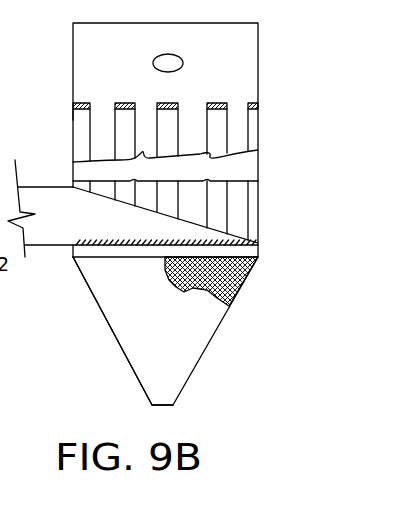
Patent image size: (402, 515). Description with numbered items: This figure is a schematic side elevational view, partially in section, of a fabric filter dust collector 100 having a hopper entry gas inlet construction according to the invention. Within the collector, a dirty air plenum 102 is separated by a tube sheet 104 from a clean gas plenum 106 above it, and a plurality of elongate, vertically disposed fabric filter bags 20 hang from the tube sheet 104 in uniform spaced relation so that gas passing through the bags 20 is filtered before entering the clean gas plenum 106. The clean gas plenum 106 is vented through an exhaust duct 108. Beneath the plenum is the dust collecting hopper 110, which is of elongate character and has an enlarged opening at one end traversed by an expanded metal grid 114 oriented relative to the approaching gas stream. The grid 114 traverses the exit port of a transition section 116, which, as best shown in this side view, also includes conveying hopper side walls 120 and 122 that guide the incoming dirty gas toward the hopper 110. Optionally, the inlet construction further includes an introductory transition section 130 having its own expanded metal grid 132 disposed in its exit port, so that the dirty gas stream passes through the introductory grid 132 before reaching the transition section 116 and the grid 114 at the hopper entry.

The fabric filter dust collector 100 is at (64, 108).
The fabric filter bags 20 is at (88, 122).
The dirty air plenum 102 is at (80, 160).
The tube sheet 104 is at (82, 104).
The clean gas plenum 106 is at (88, 48).
The exhaust duct 108 is at (177, 71).
The dust collecting hopper 110 is at (92, 296).
The expanded metal grid 114 is at (250, 282).
The transition section 116 is at (211, 383).
The conveying hopper side wall 120 is at (127, 363).
The conveying hopper side wall 122 is at (220, 322).
The introductory transition section 130 is at (145, 221).
The expanded metal grid 132 is at (106, 243).